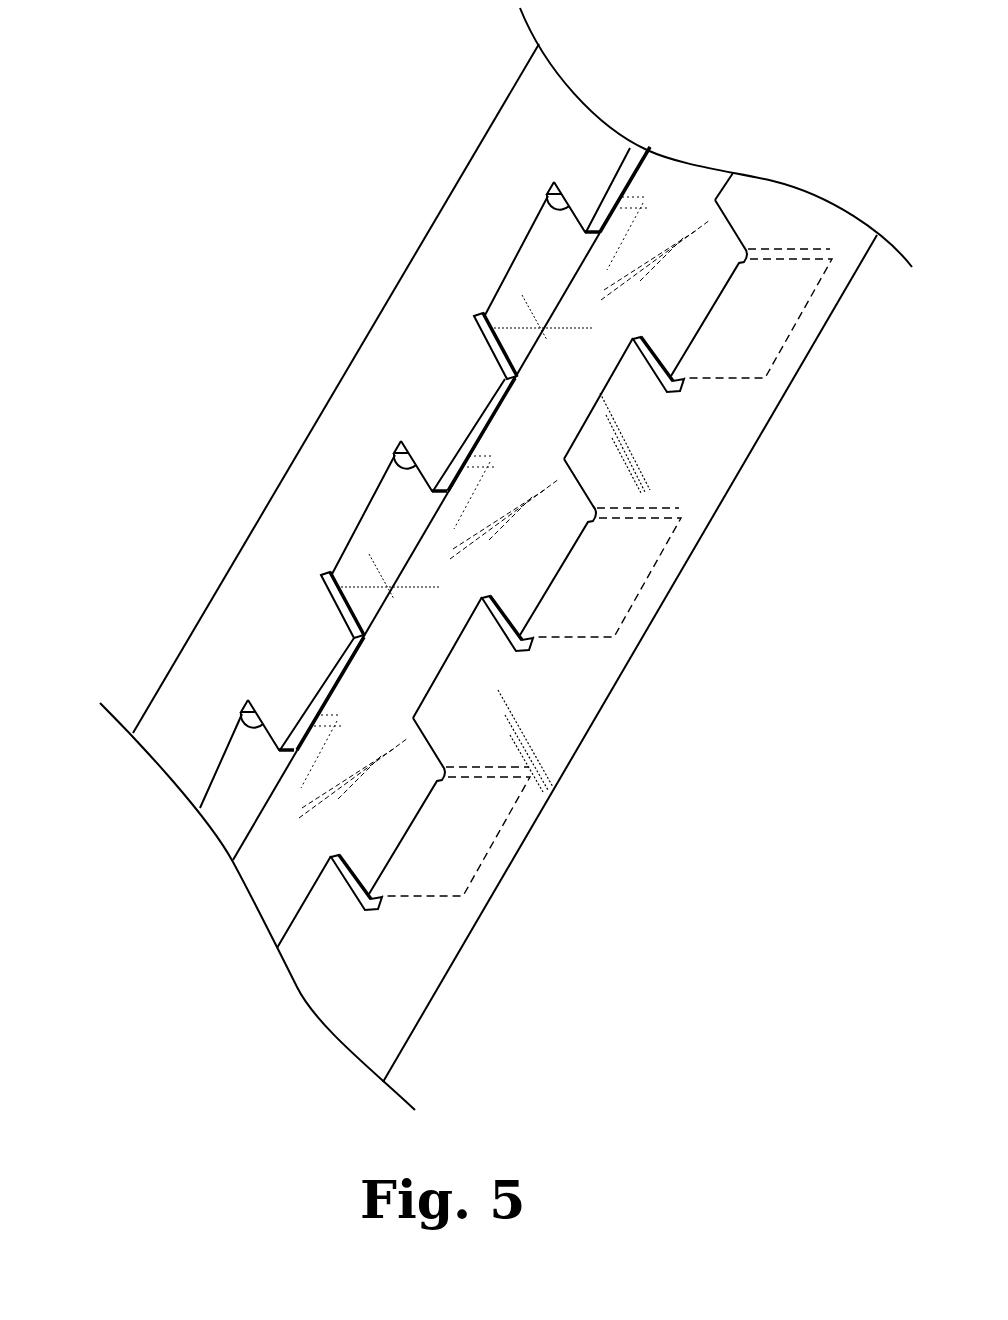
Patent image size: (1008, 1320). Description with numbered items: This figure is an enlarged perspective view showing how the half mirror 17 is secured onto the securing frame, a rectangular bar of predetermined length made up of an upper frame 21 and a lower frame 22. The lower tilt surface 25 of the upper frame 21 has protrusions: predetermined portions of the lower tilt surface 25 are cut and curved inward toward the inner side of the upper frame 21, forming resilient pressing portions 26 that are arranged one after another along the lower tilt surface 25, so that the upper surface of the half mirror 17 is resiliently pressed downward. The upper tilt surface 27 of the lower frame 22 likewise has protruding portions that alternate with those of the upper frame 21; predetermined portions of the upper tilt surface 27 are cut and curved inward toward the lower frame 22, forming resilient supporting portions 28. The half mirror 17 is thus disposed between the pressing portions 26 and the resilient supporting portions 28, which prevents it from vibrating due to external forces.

The half mirror 17 is at (395, 675).
The upper frame 21 is at (293, 545).
The lower frame 22 is at (560, 695).
The lower tilt surface 25 is at (463, 385).
The resilient pressing portions 26 is at (413, 513).
The upper tilt surface 27 is at (630, 407).
The resilient supporting portions 28 is at (583, 592).